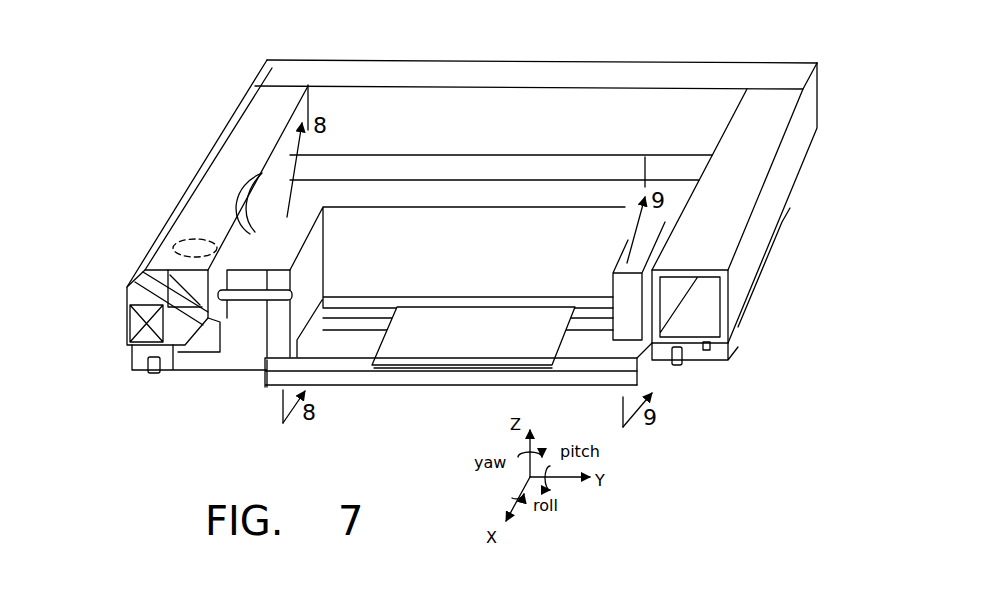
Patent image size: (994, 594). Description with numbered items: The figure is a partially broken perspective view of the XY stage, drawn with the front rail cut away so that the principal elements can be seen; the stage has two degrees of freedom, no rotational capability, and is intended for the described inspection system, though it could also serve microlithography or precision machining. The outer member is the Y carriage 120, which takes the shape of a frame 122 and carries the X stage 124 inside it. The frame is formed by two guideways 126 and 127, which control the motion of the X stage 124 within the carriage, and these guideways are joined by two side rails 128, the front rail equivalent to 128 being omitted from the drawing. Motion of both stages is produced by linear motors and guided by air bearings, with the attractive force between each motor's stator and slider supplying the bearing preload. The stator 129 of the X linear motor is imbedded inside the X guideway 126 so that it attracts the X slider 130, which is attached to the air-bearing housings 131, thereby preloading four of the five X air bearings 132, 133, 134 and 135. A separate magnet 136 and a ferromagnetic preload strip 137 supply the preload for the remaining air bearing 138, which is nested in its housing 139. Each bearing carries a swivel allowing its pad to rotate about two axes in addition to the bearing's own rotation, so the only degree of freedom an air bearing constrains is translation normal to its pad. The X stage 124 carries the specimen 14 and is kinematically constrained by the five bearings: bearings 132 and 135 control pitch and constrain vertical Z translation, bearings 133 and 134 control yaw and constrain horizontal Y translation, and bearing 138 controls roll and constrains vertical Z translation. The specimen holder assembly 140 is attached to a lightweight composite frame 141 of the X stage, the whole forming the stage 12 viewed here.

The positioning stage 12 is at (112, 342).
The specimen 14 is at (492, 334).
The Y carriage 120 is at (396, 58).
The frame 122 is at (663, 72).
The X stage 124 is at (645, 157).
The X guideway 126 is at (125, 298).
The guideway 127 is at (775, 192).
The side rail 128 is at (470, 80).
The stator 129 is at (177, 329).
The X slider 130 is at (208, 344).
The air-bearing housing 131 is at (243, 347).
The X air bearing 132 is at (140, 361).
The X air bearing 133 is at (218, 274).
The X air bearing 134 is at (250, 190).
The X air bearing 135 is at (190, 236).
The magnet 136 is at (738, 350).
The ferromagnetic preload strip 137 is at (765, 268).
The air bearing 138 is at (658, 389).
The housing 139 is at (694, 365).
The specimen holder assembly 140 is at (387, 265).
The composite frame 141 is at (416, 393).